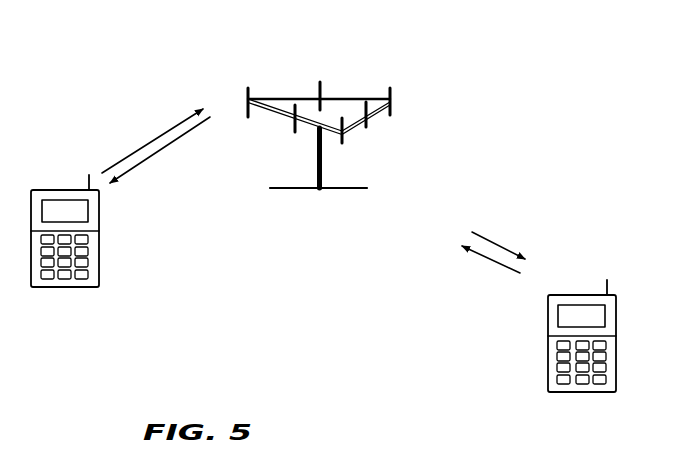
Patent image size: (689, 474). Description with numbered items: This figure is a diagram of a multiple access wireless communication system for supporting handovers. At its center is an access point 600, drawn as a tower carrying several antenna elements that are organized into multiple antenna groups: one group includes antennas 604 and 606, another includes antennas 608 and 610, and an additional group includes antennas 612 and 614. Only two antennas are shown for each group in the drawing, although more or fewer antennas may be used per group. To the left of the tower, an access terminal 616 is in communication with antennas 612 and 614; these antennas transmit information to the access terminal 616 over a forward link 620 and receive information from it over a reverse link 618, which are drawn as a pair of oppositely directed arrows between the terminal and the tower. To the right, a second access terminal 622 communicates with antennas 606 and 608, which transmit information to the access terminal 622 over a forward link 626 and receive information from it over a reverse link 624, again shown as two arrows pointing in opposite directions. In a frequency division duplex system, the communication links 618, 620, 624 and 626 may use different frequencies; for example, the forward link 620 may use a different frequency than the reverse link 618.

The access point 600 is at (318, 190).
The antenna 604 is at (344, 143).
The antenna 606 is at (370, 127).
The antenna 608 is at (393, 105).
The antenna 610 is at (321, 85).
The antenna 612 is at (250, 98).
The antenna 614 is at (295, 132).
The access terminal 616 is at (80, 190).
The reverse link 618 is at (153, 141).
The forward link 620 is at (165, 152).
The access terminal 622 is at (567, 295).
The reverse link 624 is at (483, 255).
The forward link 626 is at (503, 246).